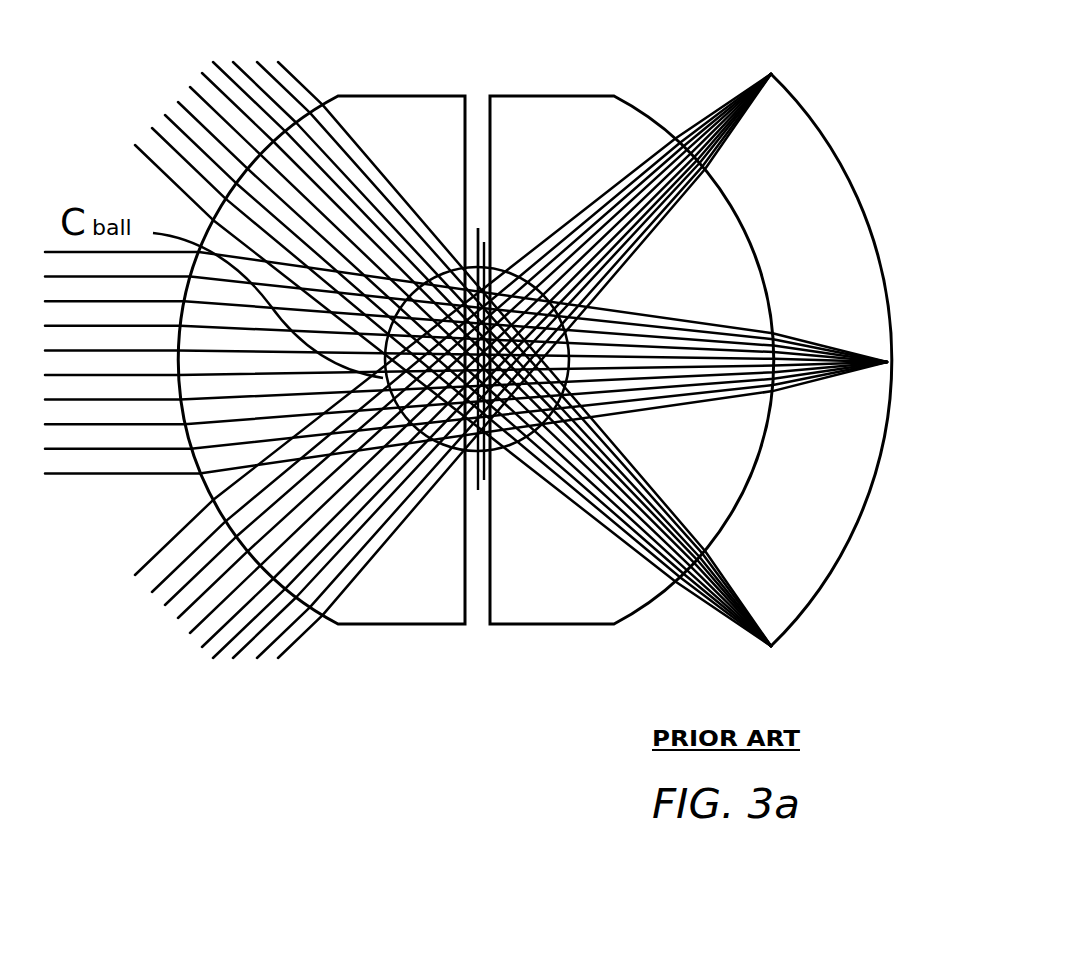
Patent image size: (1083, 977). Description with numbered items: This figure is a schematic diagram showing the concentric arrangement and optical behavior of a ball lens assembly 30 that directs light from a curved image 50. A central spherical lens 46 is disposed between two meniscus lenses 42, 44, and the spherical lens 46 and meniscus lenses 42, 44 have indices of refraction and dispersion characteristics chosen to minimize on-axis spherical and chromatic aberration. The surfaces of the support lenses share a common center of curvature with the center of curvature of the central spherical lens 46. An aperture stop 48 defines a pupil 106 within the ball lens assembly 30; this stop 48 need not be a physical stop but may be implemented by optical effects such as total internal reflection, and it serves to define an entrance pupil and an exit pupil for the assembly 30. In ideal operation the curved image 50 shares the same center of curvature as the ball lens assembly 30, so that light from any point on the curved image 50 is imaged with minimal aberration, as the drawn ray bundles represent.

The ball lens assembly 30 is at (476, 381).
The meniscus lens 42 is at (553, 96).
The meniscus lens 44 is at (405, 96).
The central spherical lens 46 is at (471, 455).
The aperture stop 48 is at (488, 243).
The curved image 50 is at (771, 73).
The pupil 106 is at (472, 258).